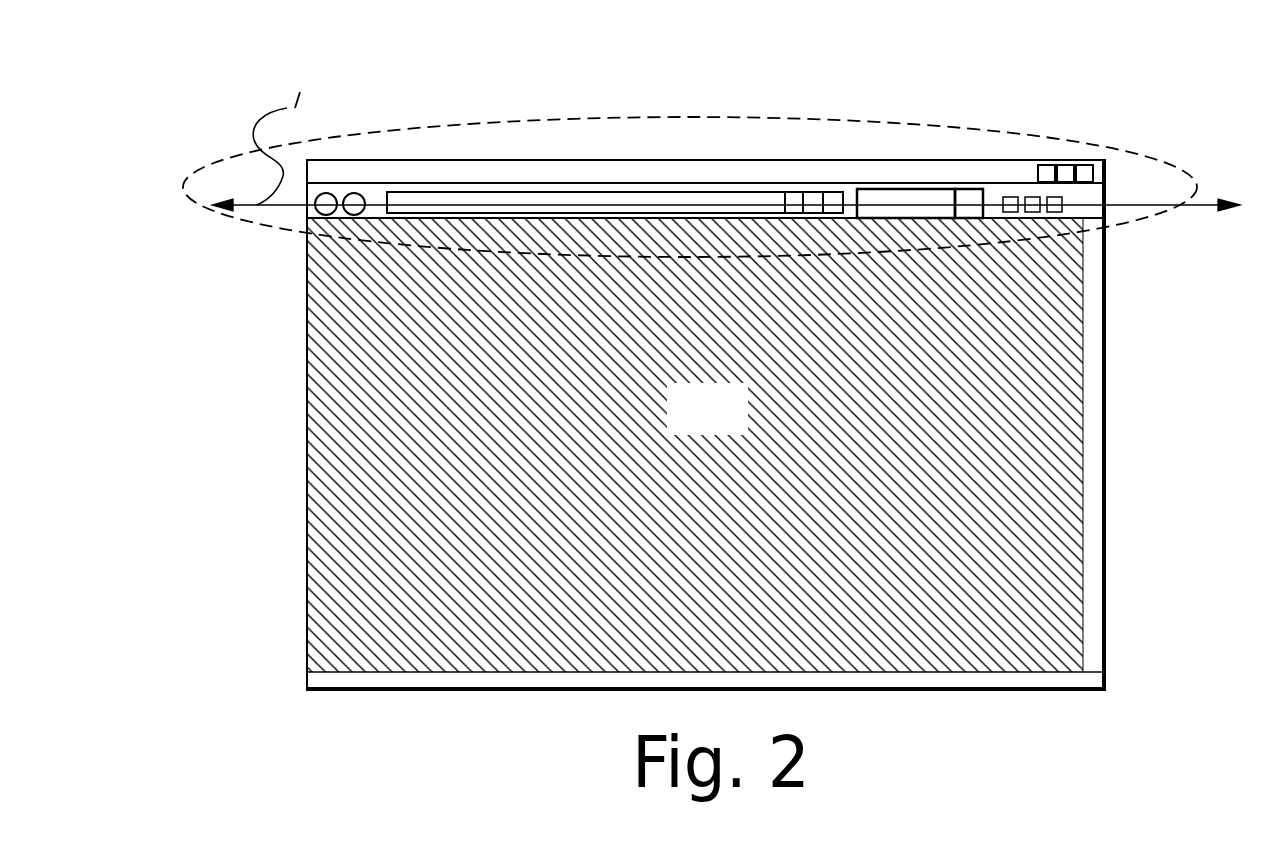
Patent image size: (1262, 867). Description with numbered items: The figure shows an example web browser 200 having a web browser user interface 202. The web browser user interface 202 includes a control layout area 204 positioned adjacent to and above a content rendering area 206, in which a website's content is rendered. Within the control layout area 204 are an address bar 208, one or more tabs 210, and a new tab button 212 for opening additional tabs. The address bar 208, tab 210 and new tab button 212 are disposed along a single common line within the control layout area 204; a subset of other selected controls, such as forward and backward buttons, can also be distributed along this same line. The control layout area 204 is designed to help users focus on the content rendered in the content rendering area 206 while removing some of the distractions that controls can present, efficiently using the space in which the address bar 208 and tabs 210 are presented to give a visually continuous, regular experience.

The web browser 200 is at (242, 116).
The web browser user interface 202 is at (306, 274).
The control layout area 204 is at (479, 119).
The content rendering area 206 is at (729, 420).
The address bar 208 is at (615, 192).
The tab 210 is at (905, 188).
The new tab button 212 is at (970, 188).